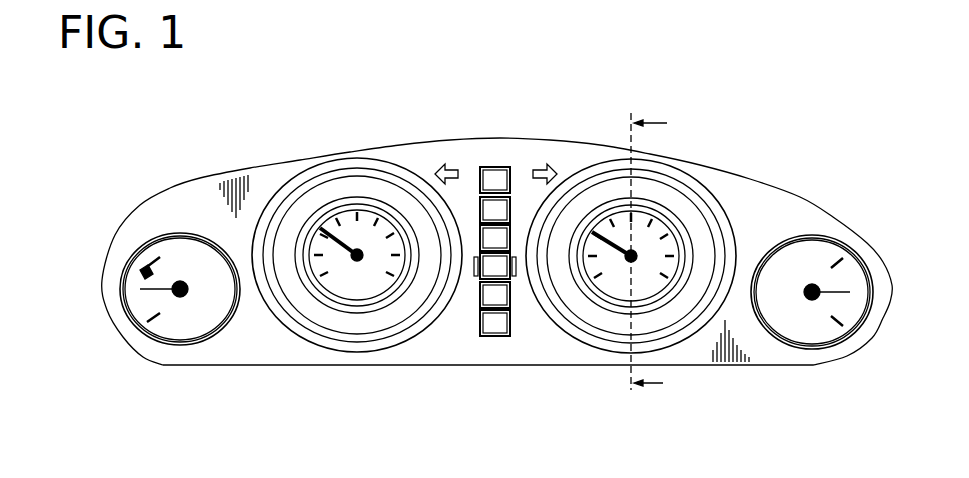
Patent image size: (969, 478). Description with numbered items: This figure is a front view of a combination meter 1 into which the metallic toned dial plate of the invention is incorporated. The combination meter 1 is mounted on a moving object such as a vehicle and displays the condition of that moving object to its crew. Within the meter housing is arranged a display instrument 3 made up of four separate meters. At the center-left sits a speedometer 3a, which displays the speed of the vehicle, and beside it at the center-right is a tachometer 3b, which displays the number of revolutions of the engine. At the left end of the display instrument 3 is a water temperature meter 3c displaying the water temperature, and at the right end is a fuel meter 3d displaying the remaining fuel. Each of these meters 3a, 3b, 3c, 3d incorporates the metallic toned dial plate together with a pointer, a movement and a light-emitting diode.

The combination meter 1 is at (795, 135).
The display instrument 3 is at (499, 288).
The speedometer 3a is at (310, 207).
The tachometer 3b is at (682, 199).
The water temperature meter 3c is at (197, 269).
The fuel meter 3d is at (797, 267).